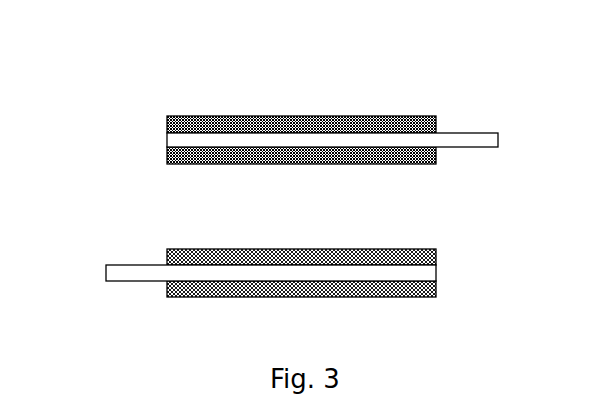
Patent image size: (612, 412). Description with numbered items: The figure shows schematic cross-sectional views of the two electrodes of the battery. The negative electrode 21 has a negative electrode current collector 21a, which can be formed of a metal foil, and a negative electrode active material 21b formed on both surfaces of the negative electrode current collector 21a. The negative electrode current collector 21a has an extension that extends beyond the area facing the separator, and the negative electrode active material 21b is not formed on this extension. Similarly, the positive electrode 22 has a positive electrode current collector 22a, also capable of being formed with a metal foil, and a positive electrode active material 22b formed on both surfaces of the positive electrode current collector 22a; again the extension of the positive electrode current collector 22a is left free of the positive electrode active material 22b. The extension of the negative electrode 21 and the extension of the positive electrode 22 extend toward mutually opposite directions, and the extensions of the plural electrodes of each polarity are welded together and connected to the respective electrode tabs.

The negative electrode 21 is at (274, 94).
The negative electrode current collector 21a is at (182, 140).
The negative electrode active material 21b is at (167, 124).
The positive electrode 22 is at (303, 245).
The positive electrode current collector 22a is at (431, 272).
The positive electrode active material 22b is at (429, 249).